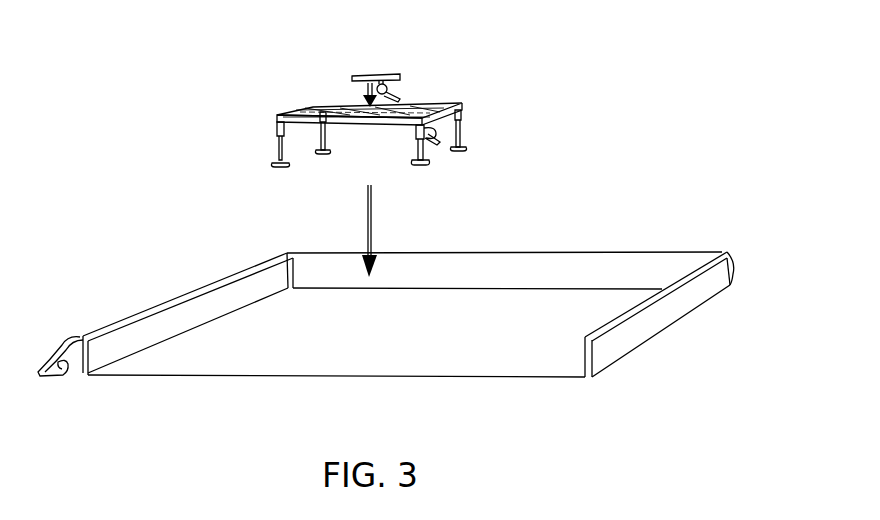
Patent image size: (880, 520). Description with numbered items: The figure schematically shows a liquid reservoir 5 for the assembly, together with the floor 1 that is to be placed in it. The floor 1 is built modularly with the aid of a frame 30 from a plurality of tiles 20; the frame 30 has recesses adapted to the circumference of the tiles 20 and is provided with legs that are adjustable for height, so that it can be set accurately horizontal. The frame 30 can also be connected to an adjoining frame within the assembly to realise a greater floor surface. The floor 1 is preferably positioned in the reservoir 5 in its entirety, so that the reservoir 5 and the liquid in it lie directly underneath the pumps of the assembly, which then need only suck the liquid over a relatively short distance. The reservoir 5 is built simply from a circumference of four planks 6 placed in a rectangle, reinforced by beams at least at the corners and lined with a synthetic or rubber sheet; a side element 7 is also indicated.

The floor 1 is at (327, 78).
The tile 20 is at (385, 72).
The frame 30 is at (302, 118).
The reservoir 5 is at (518, 303).
The side wall 7 is at (210, 298).
The plank 6 is at (83, 335).